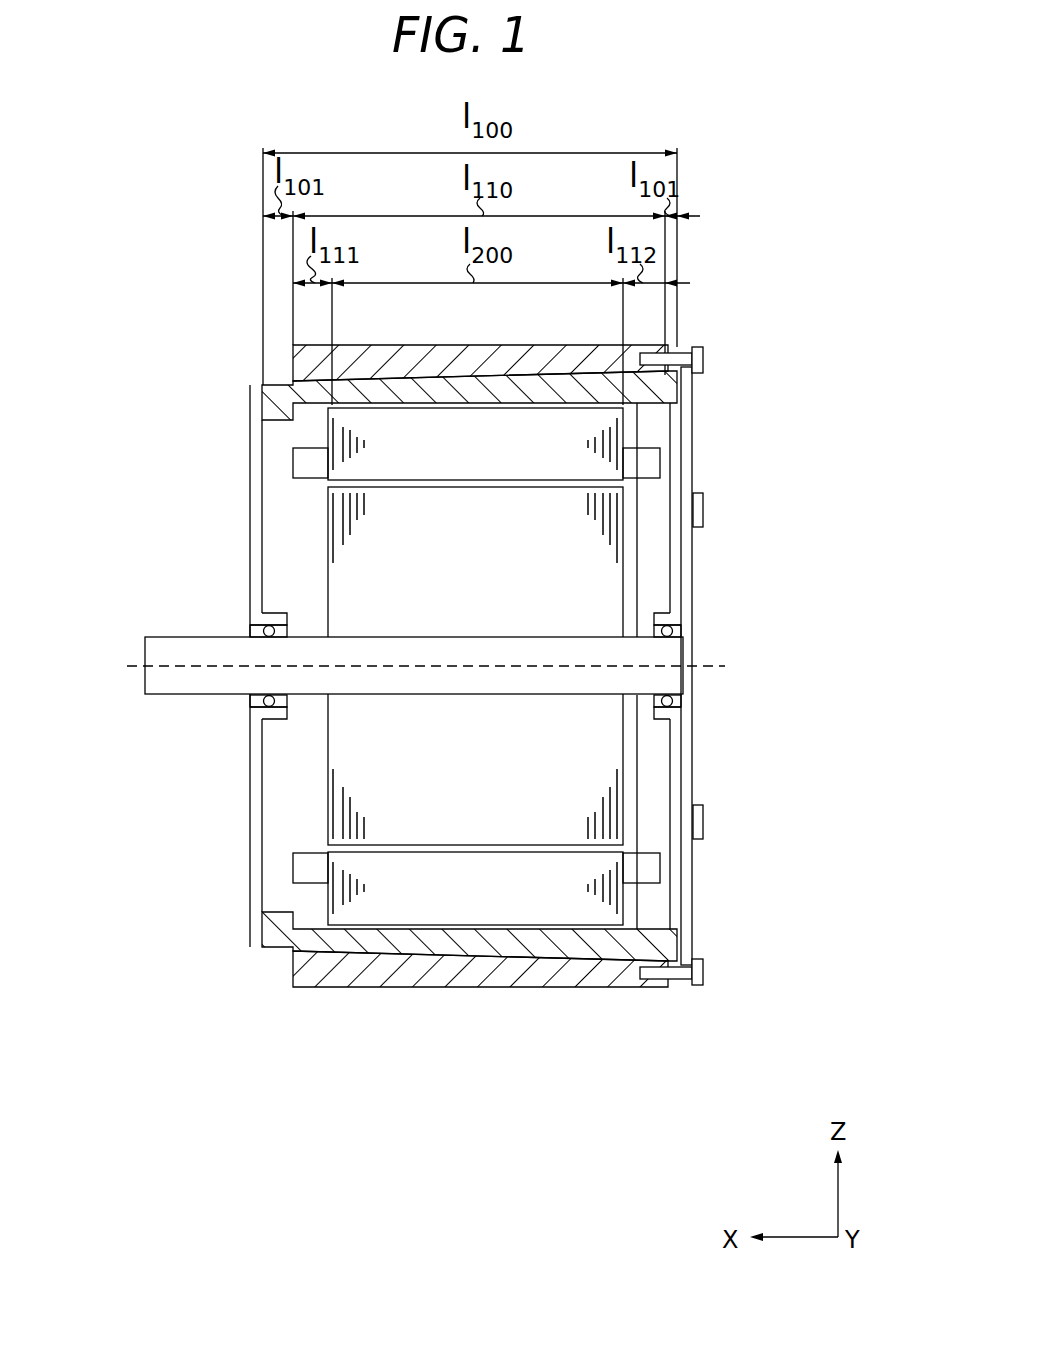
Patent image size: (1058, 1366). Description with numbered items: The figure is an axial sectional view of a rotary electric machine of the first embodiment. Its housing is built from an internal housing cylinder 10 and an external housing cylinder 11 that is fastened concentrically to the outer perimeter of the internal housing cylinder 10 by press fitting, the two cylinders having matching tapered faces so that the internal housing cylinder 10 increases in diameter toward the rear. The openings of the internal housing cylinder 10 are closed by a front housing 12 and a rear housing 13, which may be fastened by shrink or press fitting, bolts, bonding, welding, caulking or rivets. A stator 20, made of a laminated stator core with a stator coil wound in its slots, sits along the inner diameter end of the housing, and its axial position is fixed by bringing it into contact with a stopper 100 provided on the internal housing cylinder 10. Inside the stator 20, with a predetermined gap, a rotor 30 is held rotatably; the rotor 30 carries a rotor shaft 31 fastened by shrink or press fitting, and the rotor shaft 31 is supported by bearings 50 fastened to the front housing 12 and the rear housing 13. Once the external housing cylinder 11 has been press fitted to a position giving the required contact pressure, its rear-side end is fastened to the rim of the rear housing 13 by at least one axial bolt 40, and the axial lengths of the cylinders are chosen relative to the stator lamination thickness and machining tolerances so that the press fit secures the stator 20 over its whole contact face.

The internal housing cylinder 10 is at (408, 719).
The external housing cylinder 11 is at (472, 973).
The front housing 12 is at (247, 488).
The rear housing 13 is at (688, 592).
The stator 20 is at (557, 890).
The rotor 30 is at (427, 753).
The rotor shaft 31 is at (158, 680).
The bolt 40 is at (702, 347).
The bearings 50 is at (270, 628).
The stopper 100 is at (290, 947).